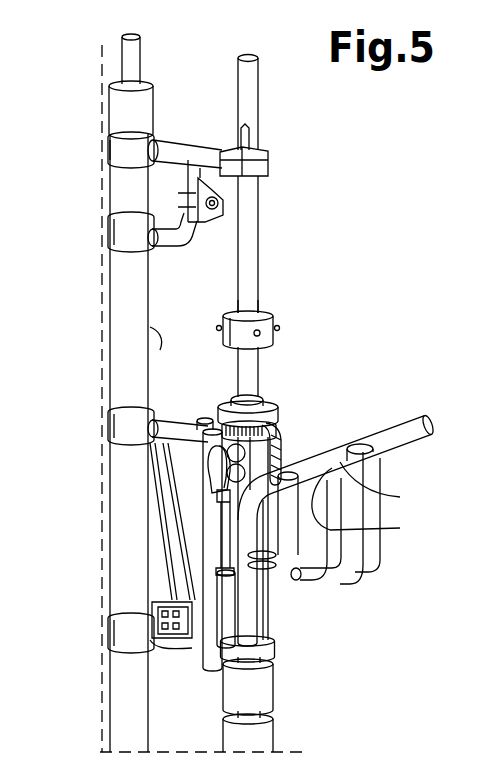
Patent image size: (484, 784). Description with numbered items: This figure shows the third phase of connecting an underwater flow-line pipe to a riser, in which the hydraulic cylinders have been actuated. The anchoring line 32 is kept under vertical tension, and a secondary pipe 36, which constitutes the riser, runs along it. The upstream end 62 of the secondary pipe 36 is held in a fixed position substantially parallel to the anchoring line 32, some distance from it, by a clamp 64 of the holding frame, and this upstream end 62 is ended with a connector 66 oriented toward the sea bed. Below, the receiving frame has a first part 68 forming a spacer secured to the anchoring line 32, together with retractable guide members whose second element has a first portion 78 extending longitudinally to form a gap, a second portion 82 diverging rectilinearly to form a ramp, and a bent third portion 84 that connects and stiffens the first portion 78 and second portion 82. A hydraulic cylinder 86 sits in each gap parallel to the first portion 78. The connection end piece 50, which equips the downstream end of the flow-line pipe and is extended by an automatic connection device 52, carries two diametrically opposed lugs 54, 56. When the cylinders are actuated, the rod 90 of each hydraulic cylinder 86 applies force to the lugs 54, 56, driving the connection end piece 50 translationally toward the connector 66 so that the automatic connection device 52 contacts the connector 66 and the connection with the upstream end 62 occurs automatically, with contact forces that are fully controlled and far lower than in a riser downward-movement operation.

The anchoring line 32 is at (118, 712).
The secondary pipe 36 is at (237, 86).
The connection end piece 50 is at (282, 381).
The automatic connection device 52 is at (275, 323).
The lug 54 is at (212, 458).
The lug 56 is at (290, 430).
The upstream end 62 is at (253, 246).
The clamp 64 is at (269, 167).
The connector 66 is at (247, 317).
The first part 68 is at (155, 624).
The first portion 78 is at (282, 628).
The second portion 82 is at (403, 437).
The bent third portion 84 is at (378, 625).
The hydraulic cylinder 86 is at (206, 663).
The rod 90 is at (356, 545).